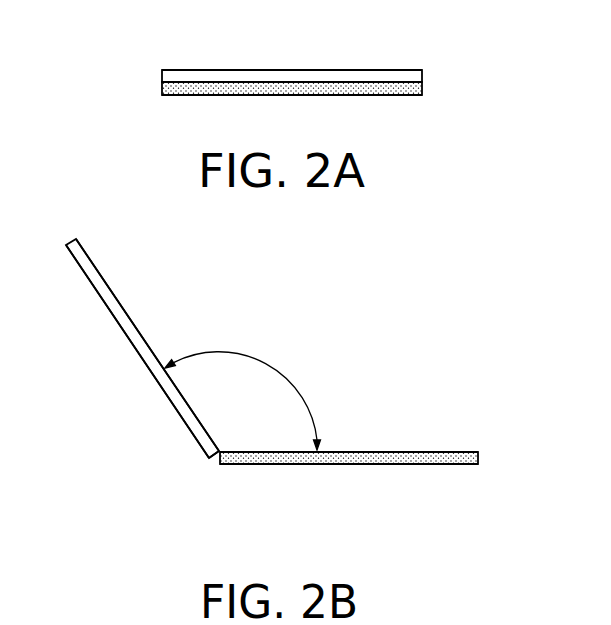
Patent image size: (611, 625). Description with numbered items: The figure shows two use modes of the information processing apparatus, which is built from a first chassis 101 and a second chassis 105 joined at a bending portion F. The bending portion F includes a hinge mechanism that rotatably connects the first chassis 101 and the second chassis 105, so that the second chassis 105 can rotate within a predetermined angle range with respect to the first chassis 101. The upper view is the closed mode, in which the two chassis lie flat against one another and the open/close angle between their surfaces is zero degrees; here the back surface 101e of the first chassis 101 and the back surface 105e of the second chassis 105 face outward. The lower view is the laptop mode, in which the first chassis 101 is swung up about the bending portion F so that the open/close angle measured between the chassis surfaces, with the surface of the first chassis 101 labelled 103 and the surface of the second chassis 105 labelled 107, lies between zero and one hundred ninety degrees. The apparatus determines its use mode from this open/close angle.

In FIG. 2A, the first chassis 101 is at (423, 77).
In FIG. 2B, the first chassis 101 is at (84, 250).
In FIG. 2A, the back surface of the first chassis 101e is at (342, 70).
In FIG. 2B, the back surface of the first chassis 101e is at (132, 343).
In FIG. 2B, the surface of first substrate 103 is at (103, 278).
In FIG. 2A, the second chassis 105 is at (423, 89).
In FIG. 2B, the second chassis 105 is at (479, 458).
In FIG. 2A, the back surface of the second chassis 105e is at (343, 95).
In FIG. 2B, the back surface of the second chassis 105e is at (392, 464).
In FIG. 2B, the surface of second substrate 107 is at (363, 452).
In FIG. 2B, the bending portion F is at (207, 468).